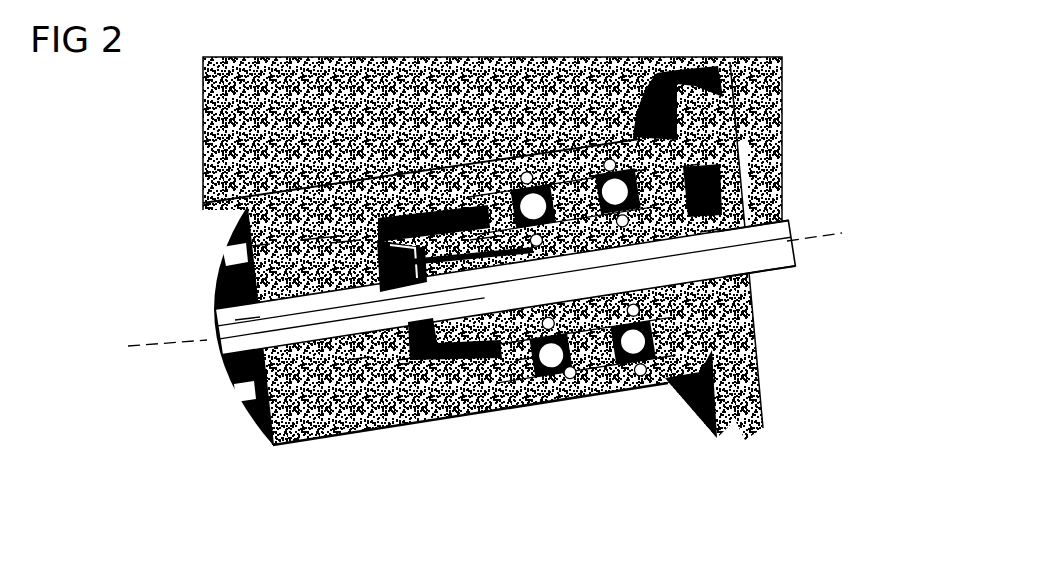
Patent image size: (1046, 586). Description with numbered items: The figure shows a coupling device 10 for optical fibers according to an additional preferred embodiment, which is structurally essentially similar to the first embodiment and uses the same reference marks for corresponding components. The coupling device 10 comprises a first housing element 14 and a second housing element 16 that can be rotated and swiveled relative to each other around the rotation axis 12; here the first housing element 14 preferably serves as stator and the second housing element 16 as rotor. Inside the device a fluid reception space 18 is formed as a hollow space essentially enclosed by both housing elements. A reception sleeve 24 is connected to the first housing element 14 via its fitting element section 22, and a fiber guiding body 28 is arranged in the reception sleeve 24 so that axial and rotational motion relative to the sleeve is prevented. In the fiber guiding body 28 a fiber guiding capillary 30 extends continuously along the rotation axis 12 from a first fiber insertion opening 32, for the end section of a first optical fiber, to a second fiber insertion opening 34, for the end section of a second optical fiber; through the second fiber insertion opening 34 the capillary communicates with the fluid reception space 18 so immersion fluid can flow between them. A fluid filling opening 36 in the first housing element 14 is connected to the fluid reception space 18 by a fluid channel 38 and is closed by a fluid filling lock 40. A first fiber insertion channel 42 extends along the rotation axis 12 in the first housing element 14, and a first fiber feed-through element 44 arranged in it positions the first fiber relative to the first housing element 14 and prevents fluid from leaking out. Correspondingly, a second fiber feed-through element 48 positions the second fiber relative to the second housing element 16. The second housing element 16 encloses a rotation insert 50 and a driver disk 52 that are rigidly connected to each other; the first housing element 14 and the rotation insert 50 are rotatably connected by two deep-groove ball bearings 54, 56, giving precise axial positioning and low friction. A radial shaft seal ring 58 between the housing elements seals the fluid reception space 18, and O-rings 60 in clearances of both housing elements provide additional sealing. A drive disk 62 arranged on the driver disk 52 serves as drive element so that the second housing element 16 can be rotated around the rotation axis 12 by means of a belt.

The coupling device 10 is at (190, 124).
The rotation axis 12 is at (122, 349).
The first housing element 14 is at (330, 240).
The second housing element 16 is at (697, 283).
The fluid reception space 18 is at (396, 365).
The fitting element section 22 is at (347, 360).
The reception sleeve 24 is at (397, 360).
The fiber guiding body 28 is at (392, 240).
The fiber guiding capillary 30 is at (433, 237).
The first fiber insertion opening 32 is at (350, 245).
The second fiber insertion opening 34 is at (493, 237).
The fluid filling opening 36 is at (250, 246).
The fluid channel 38 is at (330, 238).
The fluid filling lock 40 is at (228, 272).
The first fiber insertion channel 42 is at (235, 320).
The first fiber feed-through element 44 is at (233, 352).
The second fiber feed-through element 48 is at (765, 258).
The rotation insert 50 is at (700, 232).
The driver disk 52 is at (680, 167).
The deep-groove ball bearing 54 is at (531, 180).
The deep-groove ball bearing 56 is at (608, 163).
The radial shaft seal ring 58 is at (485, 355).
The O-ring 60 is at (613, 160).
The drive disk 62 is at (723, 95).